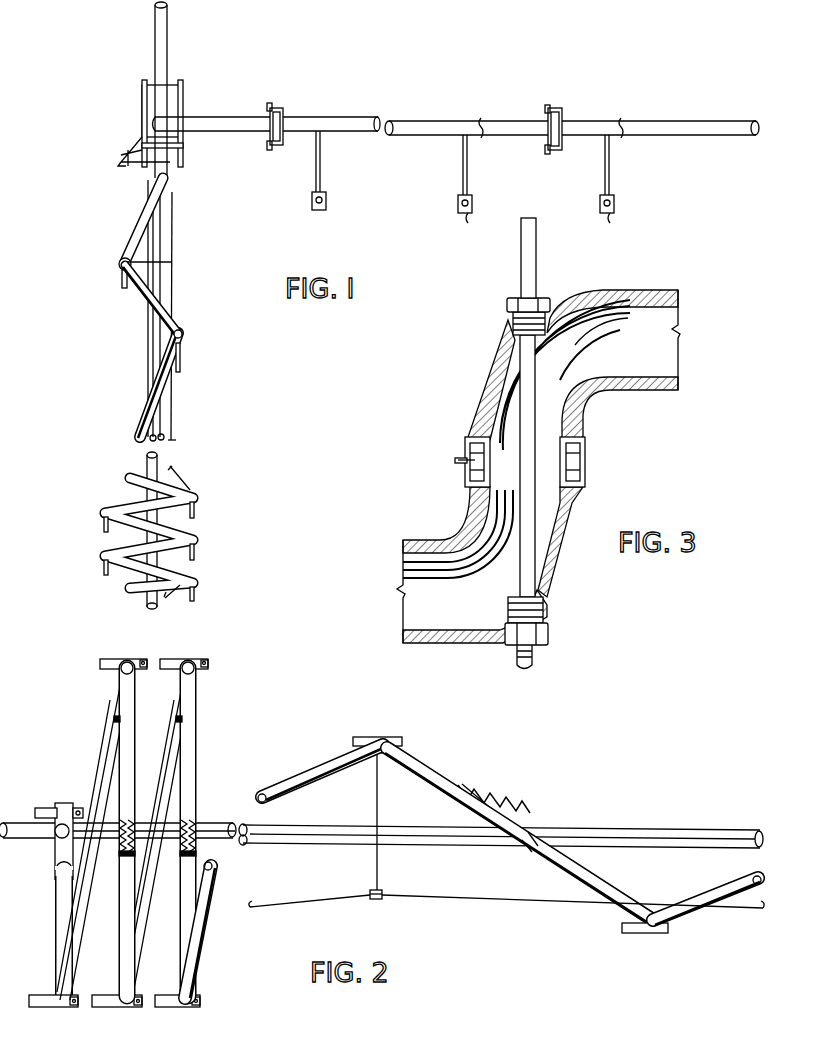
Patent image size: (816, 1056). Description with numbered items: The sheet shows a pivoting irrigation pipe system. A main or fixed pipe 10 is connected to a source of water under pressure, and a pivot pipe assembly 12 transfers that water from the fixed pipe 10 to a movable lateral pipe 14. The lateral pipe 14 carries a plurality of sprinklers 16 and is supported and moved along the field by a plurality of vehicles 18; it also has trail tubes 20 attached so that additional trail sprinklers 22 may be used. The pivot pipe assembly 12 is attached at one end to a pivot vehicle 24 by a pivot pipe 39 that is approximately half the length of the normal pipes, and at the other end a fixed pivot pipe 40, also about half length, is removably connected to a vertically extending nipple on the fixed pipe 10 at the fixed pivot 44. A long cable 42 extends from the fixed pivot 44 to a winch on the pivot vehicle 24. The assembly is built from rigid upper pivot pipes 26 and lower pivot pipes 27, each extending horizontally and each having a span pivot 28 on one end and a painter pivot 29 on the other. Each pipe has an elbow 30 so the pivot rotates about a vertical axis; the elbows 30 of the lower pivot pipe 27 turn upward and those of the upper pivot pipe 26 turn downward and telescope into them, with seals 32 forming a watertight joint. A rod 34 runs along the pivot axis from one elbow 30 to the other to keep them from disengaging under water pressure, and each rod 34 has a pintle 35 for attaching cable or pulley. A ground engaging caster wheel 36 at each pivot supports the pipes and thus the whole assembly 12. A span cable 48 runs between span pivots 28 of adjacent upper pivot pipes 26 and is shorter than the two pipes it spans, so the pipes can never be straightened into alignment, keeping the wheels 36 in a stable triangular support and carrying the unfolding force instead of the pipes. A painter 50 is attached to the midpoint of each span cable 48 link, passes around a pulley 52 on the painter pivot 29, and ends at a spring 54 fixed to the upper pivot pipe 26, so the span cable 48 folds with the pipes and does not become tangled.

In FIG. 1, the fixed pipe 10 is at (158, 41).
In FIG. 2, the fixed pipe 10 is at (14, 822).
In FIG. 1, the pivot pipe assembly 12 is at (218, 534).
In FIG. 2, the pivot pipe assembly 12 is at (228, 736).
In FIG. 1, the lateral pipe 14 is at (213, 116).
In FIG. 1, the sprinklers 16 is at (328, 122).
In FIG. 1, the vehicles 18 is at (277, 110).
In FIG. 1, the trail tubes 20 is at (321, 168).
In FIG. 1, the trail sprinklers 22 is at (321, 222).
In FIG. 1, the pivot vehicle 24 is at (142, 102).
In FIG. 3, the upper pivot pipe 26 is at (640, 293).
In FIG. 2, the upper pivot pipe 26 is at (442, 770).
In FIG. 1, the lower pivot pipe 27 is at (150, 319).
In FIG. 3, the lower pivot pipe 27 is at (415, 646).
In FIG. 2, the lower pivot pipe 27 is at (278, 768).
In FIG. 1, the span pivot 28 is at (182, 342).
In FIG. 2, the span pivot 28 is at (646, 934).
In FIG. 1, the painter pivot 29 is at (123, 266).
In FIG. 2, the painter pivot 29 is at (188, 662).
In FIG. 3, the elbow 30 is at (590, 395).
In FIG. 3, the seals 32 is at (582, 456).
In FIG. 3, the rod 34 is at (537, 371).
In FIG. 3, the pintle 35 is at (538, 250).
In FIG. 2, the caster wheel 36 is at (100, 650).
In FIG. 1, the pivot pipe 39 is at (138, 231).
In FIG. 2, the fixed pivot pipe 40 is at (52, 905).
In FIG. 2, the long cable 42 is at (602, 839).
In FIG. 2, the fixed pivot 44 is at (52, 843).
In FIG. 1, the span cable 48 is at (184, 322).
In FIG. 2, the span cable 48 is at (496, 914).
In FIG. 2, the painter 50 is at (196, 791).
In FIG. 2, the pulley 52 is at (403, 750).
In FIG. 2, the spring 54 is at (198, 820).